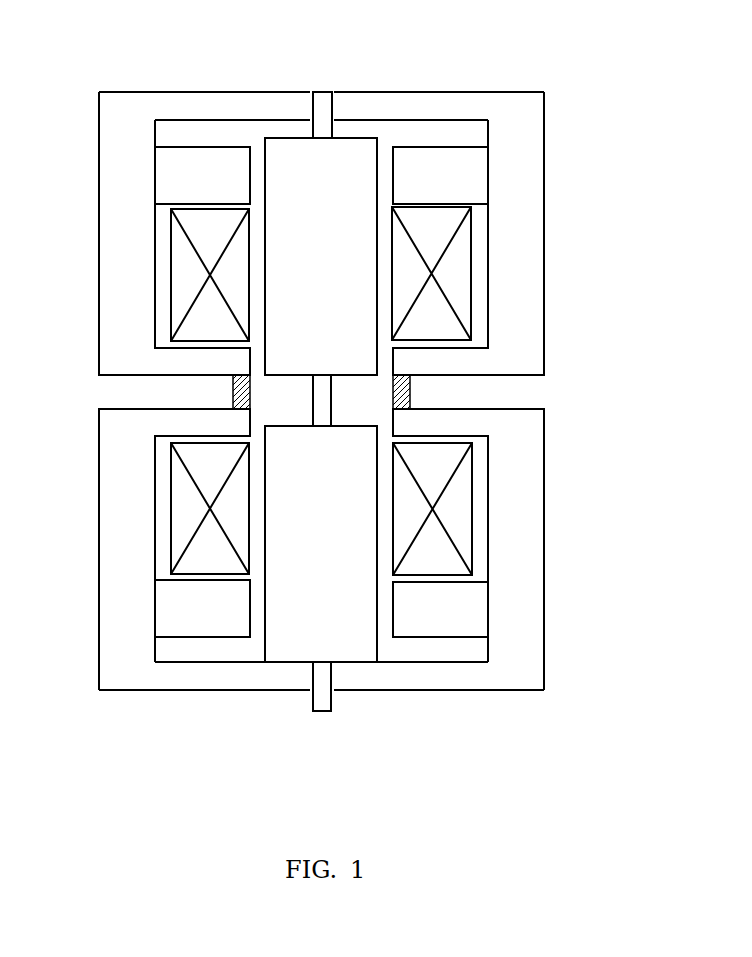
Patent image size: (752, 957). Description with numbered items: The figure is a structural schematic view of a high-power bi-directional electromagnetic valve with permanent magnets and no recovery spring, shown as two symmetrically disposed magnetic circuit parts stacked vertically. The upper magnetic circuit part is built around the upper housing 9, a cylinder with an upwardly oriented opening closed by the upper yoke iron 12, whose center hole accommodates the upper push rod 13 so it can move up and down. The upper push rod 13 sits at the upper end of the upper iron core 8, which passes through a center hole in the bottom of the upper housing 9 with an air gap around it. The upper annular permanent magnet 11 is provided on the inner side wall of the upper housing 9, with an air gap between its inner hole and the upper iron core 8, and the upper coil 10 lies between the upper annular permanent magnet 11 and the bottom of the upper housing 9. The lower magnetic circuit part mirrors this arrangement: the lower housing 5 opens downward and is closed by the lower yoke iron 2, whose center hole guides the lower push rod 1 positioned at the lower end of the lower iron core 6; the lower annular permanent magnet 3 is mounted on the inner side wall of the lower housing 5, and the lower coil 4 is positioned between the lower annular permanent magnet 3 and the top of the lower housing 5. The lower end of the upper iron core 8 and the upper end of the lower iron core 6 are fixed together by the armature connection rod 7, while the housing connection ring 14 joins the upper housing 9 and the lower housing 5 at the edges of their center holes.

The lower push rod 1 is at (322, 705).
The lower yoke iron 2 is at (377, 683).
The lower annular permanent magnet 3 is at (435, 628).
The lower coil 4 is at (466, 516).
The lower housing 5 is at (512, 497).
The lower iron core 6 is at (365, 508).
The armature connection rod 7 is at (323, 412).
The upper iron core 8 is at (348, 248).
The upper housing 9 is at (520, 278).
The upper coil 10 is at (457, 262).
The upper annular permanent magnet 11 is at (450, 165).
The upper yoke iron 12 is at (417, 103).
The upper push rod 13 is at (318, 103).
The housing connection ring 14 is at (244, 385).